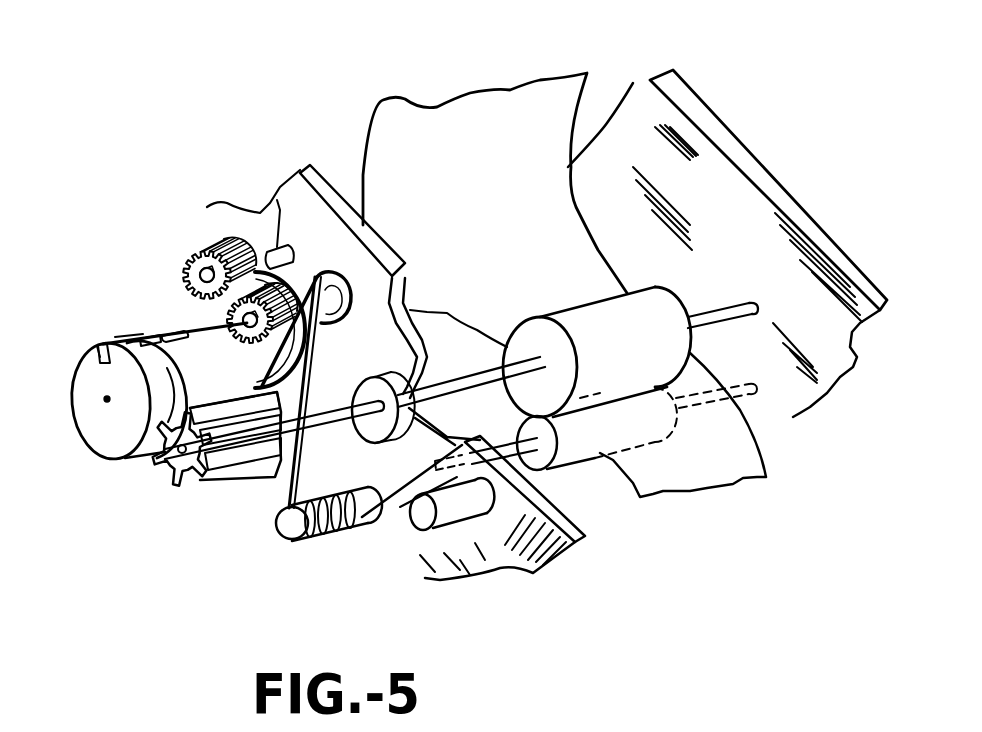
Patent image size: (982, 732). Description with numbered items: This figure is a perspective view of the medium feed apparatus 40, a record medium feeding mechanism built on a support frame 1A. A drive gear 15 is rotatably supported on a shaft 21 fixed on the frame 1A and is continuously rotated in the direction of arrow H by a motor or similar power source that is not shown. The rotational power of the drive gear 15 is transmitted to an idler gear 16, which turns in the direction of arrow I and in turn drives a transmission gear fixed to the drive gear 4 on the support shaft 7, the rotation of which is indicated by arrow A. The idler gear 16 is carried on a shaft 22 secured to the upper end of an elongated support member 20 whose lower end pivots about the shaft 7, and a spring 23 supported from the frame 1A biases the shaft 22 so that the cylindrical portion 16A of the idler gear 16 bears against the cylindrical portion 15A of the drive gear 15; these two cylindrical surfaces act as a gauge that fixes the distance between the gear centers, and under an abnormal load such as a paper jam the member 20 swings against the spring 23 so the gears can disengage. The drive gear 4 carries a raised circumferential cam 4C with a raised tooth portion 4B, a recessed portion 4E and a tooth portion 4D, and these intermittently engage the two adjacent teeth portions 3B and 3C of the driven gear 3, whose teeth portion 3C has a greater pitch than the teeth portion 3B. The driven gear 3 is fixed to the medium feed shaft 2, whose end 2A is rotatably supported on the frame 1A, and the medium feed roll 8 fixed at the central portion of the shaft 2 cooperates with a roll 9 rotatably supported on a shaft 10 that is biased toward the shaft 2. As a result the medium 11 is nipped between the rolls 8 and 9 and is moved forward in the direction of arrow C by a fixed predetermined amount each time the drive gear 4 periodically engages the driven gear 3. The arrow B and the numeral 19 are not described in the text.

The medium feed apparatus 40 is at (253, 90).
The support frame 1A is at (315, 182).
The medium 11 is at (537, 112).
The medium feed direction arrow C is at (466, 122).
The cylindrical portion of drive gear 15A is at (277, 195).
The drive gear 15 is at (213, 250).
The shaft 21 is at (195, 252).
The rotation direction arrow of drive gear H is at (188, 315).
The idler gear 16 is at (255, 372).
The cylindrical portion of idler gear 16A is at (293, 270).
The elongated support member 20 is at (352, 287).
The shaft 22 is at (302, 392).
The pulley 19 is at (356, 374).
The medium feed shaft 2 is at (478, 378).
The shaft end 2A is at (743, 300).
The medium feed roll 8 is at (600, 320).
The roll 9 is at (600, 452).
The shaft 10 is at (759, 392).
The spring 23 is at (413, 508).
The support shaft 7 is at (103, 397).
The rotation direction arrow A is at (80, 445).
The drive gear 4 is at (106, 466).
The cam 4C is at (127, 460).
The raised tooth portion 4B is at (168, 335).
The tooth portion 4D is at (112, 344).
The recessed portion 4E is at (98, 346).
The rotation direction arrow of idler gear I is at (247, 363).
The driven gear 3 is at (200, 495).
The rotation direction of gear 3 B is at (160, 485).
The teeth portion 3C is at (262, 478).
The teeth portion 3B is at (282, 480).